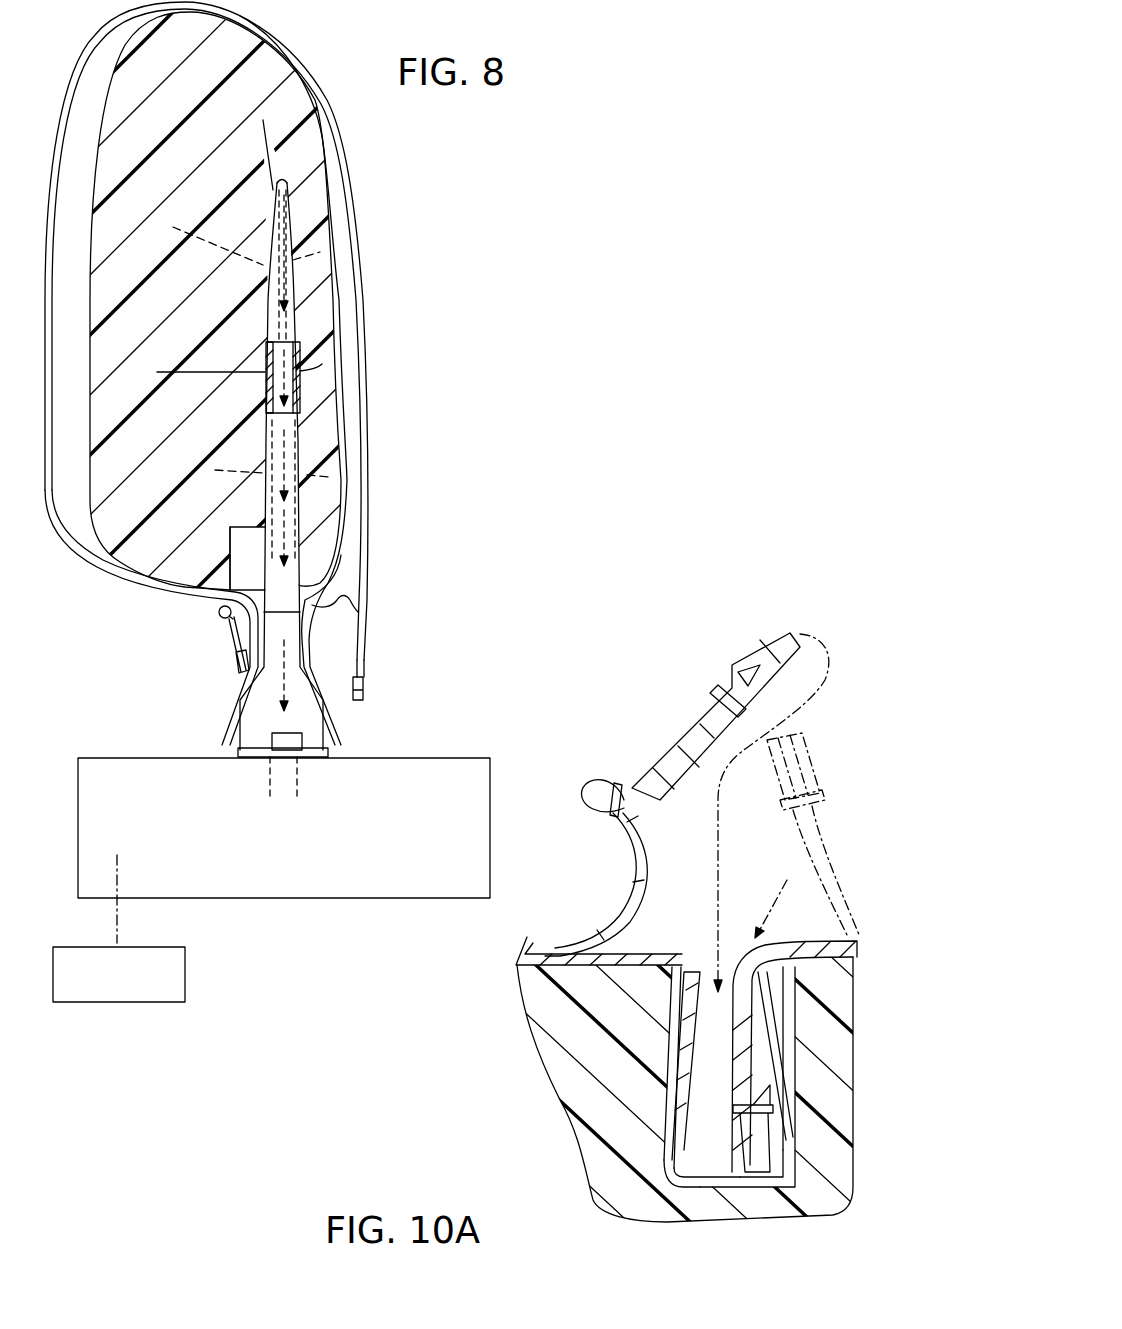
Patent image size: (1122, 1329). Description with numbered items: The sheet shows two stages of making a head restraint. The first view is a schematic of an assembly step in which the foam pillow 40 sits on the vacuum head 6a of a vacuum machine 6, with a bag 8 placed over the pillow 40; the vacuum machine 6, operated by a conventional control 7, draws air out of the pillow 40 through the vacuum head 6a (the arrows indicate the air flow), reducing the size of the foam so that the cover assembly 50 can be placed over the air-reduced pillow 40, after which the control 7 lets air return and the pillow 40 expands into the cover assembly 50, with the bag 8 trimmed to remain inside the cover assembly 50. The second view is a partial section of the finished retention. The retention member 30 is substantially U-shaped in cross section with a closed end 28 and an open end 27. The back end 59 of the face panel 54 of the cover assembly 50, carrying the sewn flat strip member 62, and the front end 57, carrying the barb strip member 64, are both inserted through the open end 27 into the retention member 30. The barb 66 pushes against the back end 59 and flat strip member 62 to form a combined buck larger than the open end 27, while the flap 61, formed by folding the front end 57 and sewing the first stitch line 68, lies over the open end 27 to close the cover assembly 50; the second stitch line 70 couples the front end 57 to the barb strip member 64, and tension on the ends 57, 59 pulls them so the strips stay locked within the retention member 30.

In FIG. 8, the vacuum machine 6 is at (105, 757).
In FIG. 8, the vacuum head 6a is at (313, 540).
In FIG. 8, the control 7 is at (79, 946).
In FIG. 8, the bag 8 is at (347, 362).
In FIG. 10A, the bag 8 is at (622, 952).
In FIG. 10A, the open end 27 is at (674, 987).
In FIG. 10A, the closed end 28 is at (667, 1186).
In FIG. 10A, the retention member 30 is at (670, 1113).
In FIG. 8, the pillow 40 is at (318, 307).
In FIG. 10A, the pillow 40 is at (837, 1050).
In FIG. 8, the cover assembly 50 is at (365, 568).
In FIG. 10A, the face panel 54 is at (603, 913).
In FIG. 8, the front end 57 is at (201, 641).
In FIG. 10A, the front end 57 is at (703, 654).
In FIG. 8, the back end 59 is at (385, 698).
In FIG. 10A, the back end 59 is at (738, 1165).
In FIG. 10A, the flap 61 is at (588, 790).
In FIG. 8, the flat strip member 62 is at (357, 683).
In FIG. 10A, the flat strip member 62 is at (767, 1123).
In FIG. 8, the barb strip member 64 is at (240, 668).
In FIG. 10A, the barb strip member 64 is at (790, 636).
In FIG. 10A, the barb 66 is at (750, 653).
In FIG. 10A, the first stitch line 68 is at (622, 783).
In FIG. 10A, the second stitch line 70 is at (710, 693).